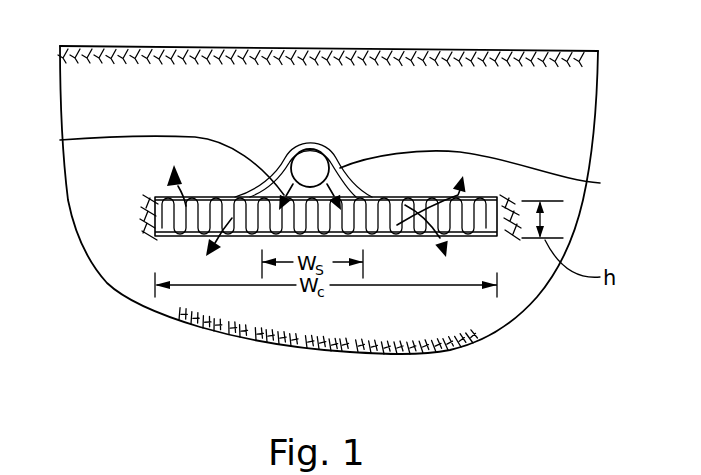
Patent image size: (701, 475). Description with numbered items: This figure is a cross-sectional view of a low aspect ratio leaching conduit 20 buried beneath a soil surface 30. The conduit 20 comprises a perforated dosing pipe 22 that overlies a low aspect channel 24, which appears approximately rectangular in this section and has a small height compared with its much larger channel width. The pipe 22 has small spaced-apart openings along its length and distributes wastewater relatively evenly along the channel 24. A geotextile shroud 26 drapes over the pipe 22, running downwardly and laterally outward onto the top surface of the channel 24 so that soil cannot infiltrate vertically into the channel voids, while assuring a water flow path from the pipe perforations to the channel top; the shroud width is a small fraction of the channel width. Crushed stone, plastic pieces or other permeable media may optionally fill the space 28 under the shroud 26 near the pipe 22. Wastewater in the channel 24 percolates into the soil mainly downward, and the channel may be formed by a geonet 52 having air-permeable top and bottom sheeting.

The conduit 20 is at (528, 127).
The perforated dosing pipe 22 is at (300, 153).
The low aspect channel 24 is at (423, 248).
The geotextile shroud 26 is at (600, 183).
The space under the shroud 28 is at (60, 140).
The soil surface 30 is at (350, 44).
The geonet 52 is at (172, 216).